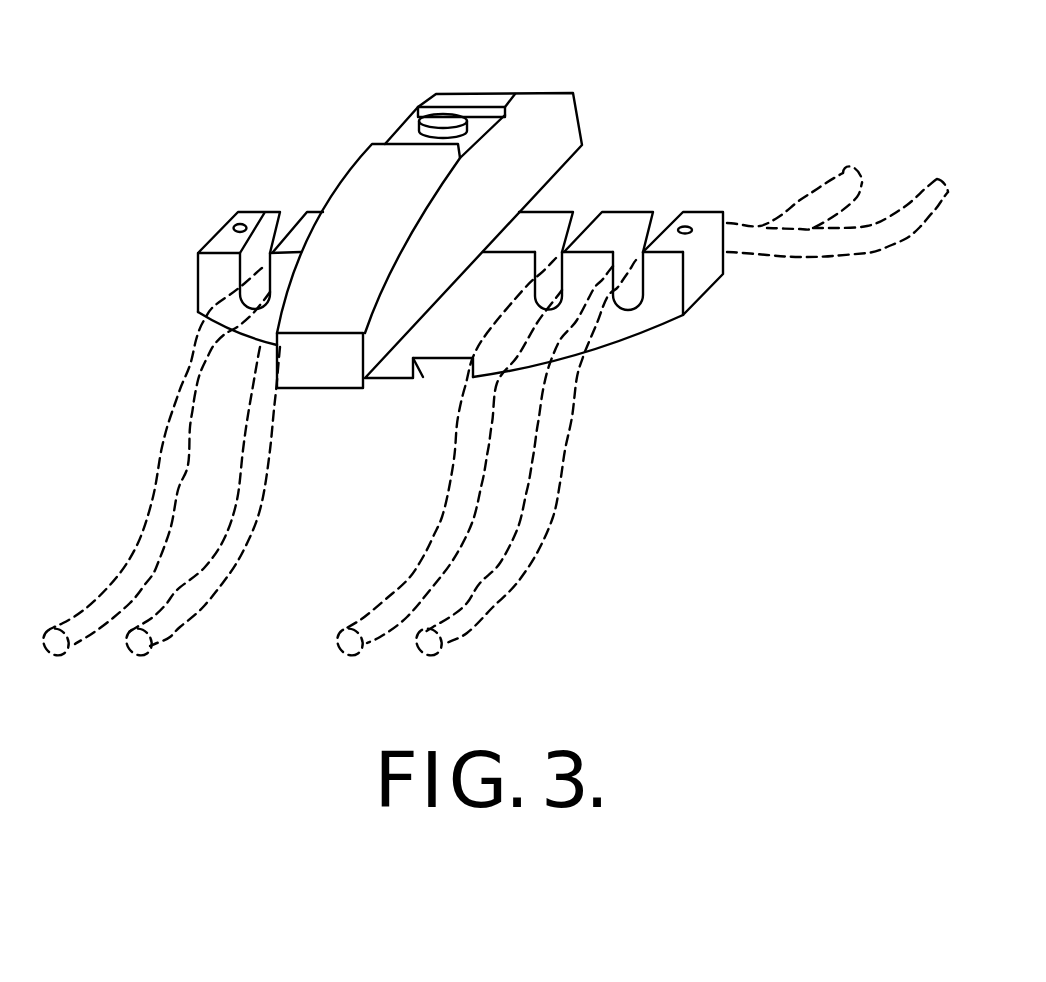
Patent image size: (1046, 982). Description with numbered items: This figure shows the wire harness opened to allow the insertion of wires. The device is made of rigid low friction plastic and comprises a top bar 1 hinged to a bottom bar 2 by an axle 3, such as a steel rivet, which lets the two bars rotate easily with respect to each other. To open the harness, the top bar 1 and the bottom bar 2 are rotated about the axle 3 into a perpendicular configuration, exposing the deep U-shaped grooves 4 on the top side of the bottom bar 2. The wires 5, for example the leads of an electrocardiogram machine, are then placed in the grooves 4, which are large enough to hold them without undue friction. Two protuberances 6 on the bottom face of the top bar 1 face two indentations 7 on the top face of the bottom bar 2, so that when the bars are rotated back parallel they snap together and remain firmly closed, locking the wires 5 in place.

The top bar 1 is at (582, 117).
The bottom bar 2 is at (677, 320).
The axle 3 is at (445, 118).
The U-shaped grooves 4 is at (633, 307).
The wires 5 is at (545, 523).
The protuberances 6 is at (330, 388).
The indentations 7 is at (233, 223).